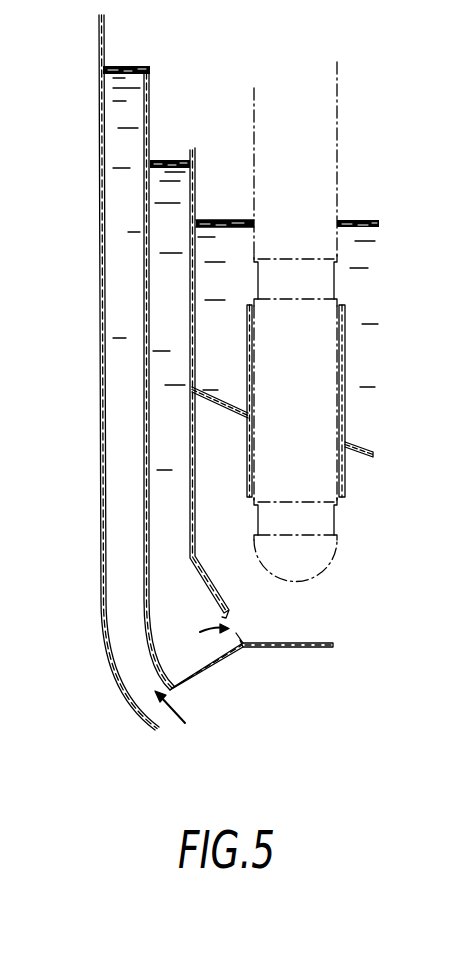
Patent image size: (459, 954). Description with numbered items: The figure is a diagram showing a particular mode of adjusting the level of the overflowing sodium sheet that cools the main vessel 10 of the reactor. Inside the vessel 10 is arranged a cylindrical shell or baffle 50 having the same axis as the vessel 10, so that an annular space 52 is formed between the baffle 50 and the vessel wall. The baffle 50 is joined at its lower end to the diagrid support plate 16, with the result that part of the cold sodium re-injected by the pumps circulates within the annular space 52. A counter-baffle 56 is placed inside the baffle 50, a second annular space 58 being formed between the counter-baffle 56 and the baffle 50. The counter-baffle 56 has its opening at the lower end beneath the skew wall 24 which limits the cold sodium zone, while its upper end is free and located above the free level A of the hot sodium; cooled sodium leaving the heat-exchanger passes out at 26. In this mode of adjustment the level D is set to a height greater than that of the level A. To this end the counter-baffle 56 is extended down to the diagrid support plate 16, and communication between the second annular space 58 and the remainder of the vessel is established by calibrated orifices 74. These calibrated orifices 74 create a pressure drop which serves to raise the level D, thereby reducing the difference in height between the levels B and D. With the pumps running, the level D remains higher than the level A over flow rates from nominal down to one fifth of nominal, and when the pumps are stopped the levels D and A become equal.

The vessel 10 is at (98, 48).
The diagrid support plate 16 is at (272, 647).
The skew wall 24 is at (348, 441).
The heat-exchanger outlet 26 is at (338, 143).
The cylindrical shell 50 is at (148, 352).
The annular space 52 is at (118, 404).
The counter-baffle 56 is at (218, 307).
The second annular space 58 is at (170, 482).
The calibrated orifices 74 is at (237, 623).
The free level of the hot sodium A is at (222, 216).
The level B is at (121, 64).
The free level of sodium D is at (172, 154).